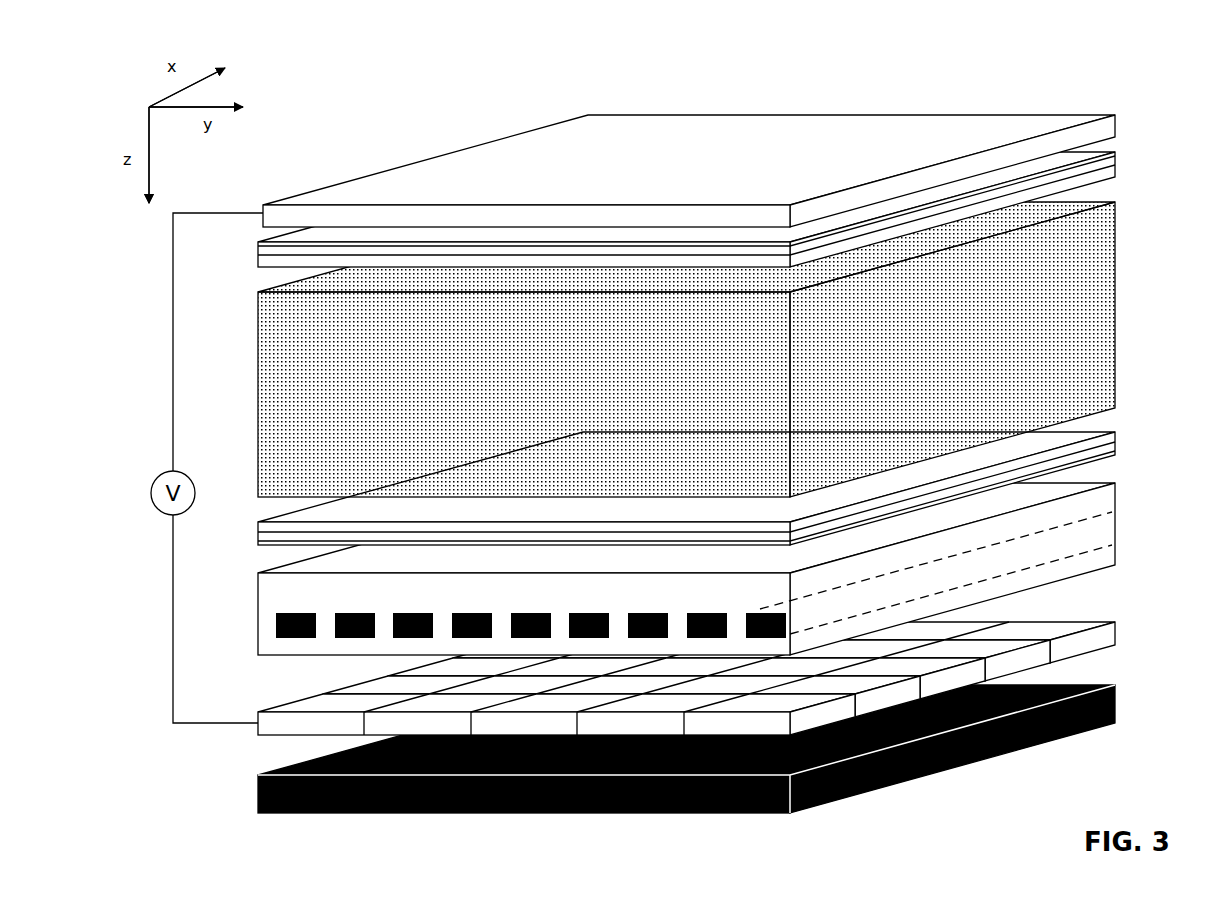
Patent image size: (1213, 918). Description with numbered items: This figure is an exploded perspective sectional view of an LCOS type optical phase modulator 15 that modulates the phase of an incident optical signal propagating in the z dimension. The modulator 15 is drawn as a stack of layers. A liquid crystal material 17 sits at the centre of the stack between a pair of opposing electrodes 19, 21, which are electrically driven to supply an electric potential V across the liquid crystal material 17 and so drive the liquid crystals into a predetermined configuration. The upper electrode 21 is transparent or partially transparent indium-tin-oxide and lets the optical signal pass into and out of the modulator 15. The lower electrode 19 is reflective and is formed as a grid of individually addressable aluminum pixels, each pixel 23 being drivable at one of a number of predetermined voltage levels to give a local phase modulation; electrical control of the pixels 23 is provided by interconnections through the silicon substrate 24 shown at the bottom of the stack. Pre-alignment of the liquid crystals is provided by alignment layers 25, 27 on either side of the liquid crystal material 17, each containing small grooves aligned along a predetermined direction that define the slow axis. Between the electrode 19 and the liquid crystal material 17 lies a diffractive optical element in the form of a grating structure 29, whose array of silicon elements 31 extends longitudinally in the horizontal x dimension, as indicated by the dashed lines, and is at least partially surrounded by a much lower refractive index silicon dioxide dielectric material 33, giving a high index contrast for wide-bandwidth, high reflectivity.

The optical phase modulator 15 is at (704, 431).
The electrode 21 is at (1093, 138).
The alignment layer 25 is at (1095, 177).
The liquid crystal material 17 is at (1098, 355).
The alignment layer 27 is at (1095, 450).
The dielectric material 33 is at (704, 555).
The grating structure 29 is at (1130, 521).
The elements 31 is at (277, 612).
The electrode 19 is at (698, 684).
The pixel 23 is at (283, 724).
The silicon substrate 24 is at (930, 783).